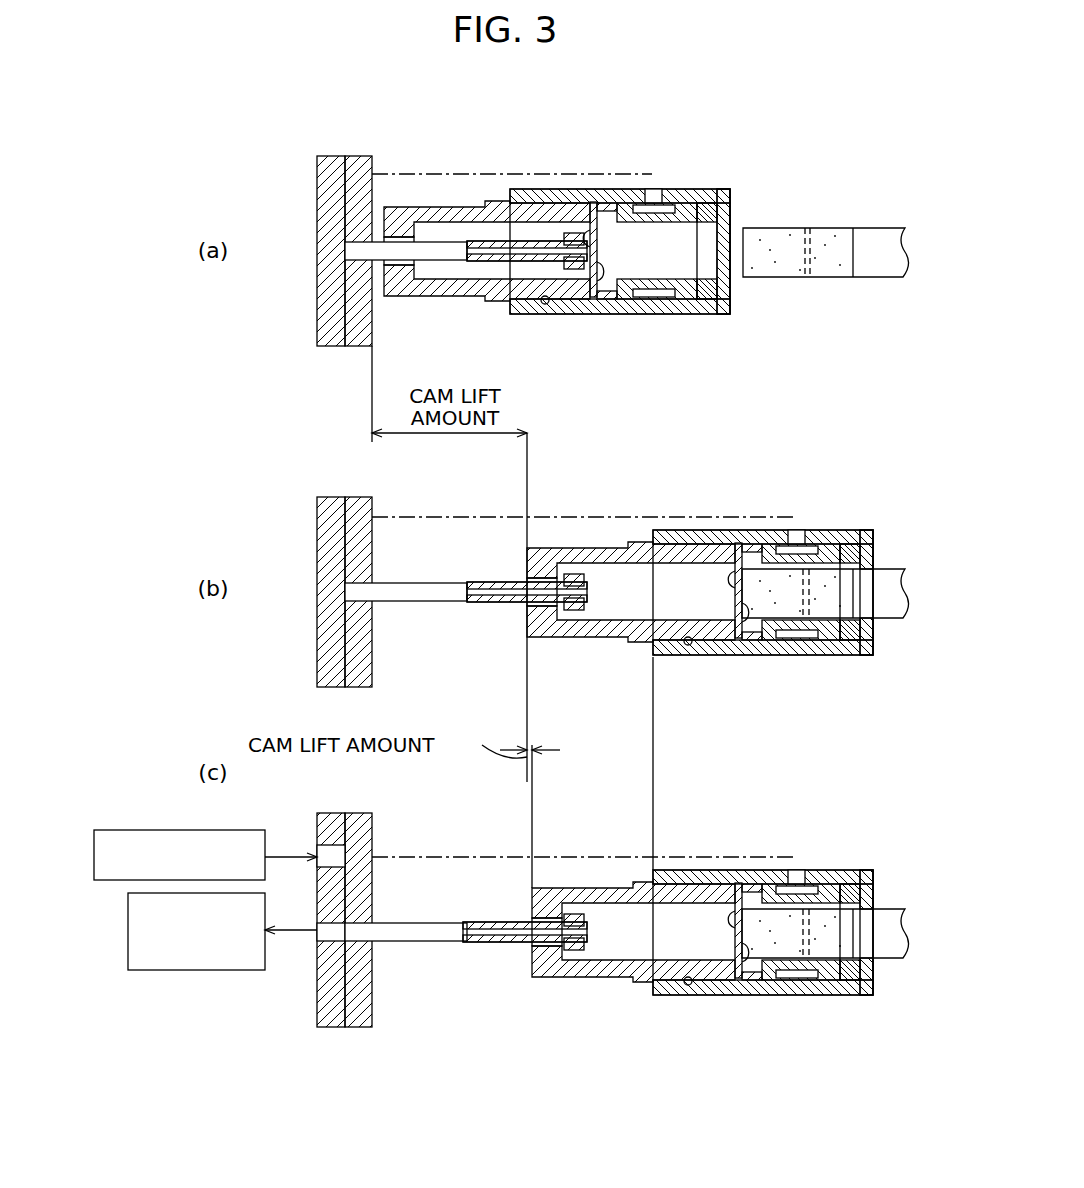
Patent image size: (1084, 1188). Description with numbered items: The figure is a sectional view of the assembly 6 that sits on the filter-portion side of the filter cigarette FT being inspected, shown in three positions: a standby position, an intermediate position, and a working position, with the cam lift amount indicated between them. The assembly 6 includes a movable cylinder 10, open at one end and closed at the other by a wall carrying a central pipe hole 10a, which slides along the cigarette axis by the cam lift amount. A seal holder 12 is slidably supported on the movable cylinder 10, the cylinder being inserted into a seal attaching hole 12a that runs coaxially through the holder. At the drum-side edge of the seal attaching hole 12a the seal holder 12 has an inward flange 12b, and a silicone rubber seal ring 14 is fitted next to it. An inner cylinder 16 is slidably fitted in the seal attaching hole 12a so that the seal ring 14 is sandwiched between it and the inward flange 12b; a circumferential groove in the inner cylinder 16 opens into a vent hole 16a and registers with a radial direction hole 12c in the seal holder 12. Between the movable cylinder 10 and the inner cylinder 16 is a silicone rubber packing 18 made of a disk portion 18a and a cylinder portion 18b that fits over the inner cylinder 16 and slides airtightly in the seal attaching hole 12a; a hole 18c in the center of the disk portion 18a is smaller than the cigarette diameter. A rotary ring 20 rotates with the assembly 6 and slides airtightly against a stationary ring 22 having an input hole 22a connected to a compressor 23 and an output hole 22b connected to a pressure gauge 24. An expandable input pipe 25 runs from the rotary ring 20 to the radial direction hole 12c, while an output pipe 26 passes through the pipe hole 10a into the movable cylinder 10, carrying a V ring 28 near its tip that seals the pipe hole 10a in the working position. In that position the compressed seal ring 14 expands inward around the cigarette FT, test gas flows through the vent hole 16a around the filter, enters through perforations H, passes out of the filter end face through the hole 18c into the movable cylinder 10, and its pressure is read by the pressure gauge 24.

The assembly 6 is at (720, 133).
The movable cylinder 10 is at (473, 297).
The pipe hole 10a is at (402, 262).
The seal holder 12 is at (635, 316).
The seal attaching hole 12a is at (545, 304).
The inward flange 12b is at (732, 220).
The radial direction hole 12c is at (660, 190).
The seal ring 14 is at (712, 299).
The inner cylinder 16 is at (682, 298).
The vent hole 16a is at (665, 208).
The packing 18 is at (594, 205).
The disk portion 18a is at (588, 228).
The cylinder portion 18b is at (613, 207).
The hole 18c is at (604, 300).
The rotary ring 20 is at (360, 165).
The stationary ring 22 is at (331, 165).
The input hole 22a is at (316, 852).
The output hole 22b is at (316, 942).
The compressor 23 is at (113, 830).
The pressure gauge 24 is at (140, 972).
The input pipe 25 is at (428, 174).
The output pipe 26 is at (432, 255).
The V ring 28 is at (572, 270).
The perforations H is at (817, 241).
The cigarette FT is at (875, 240).